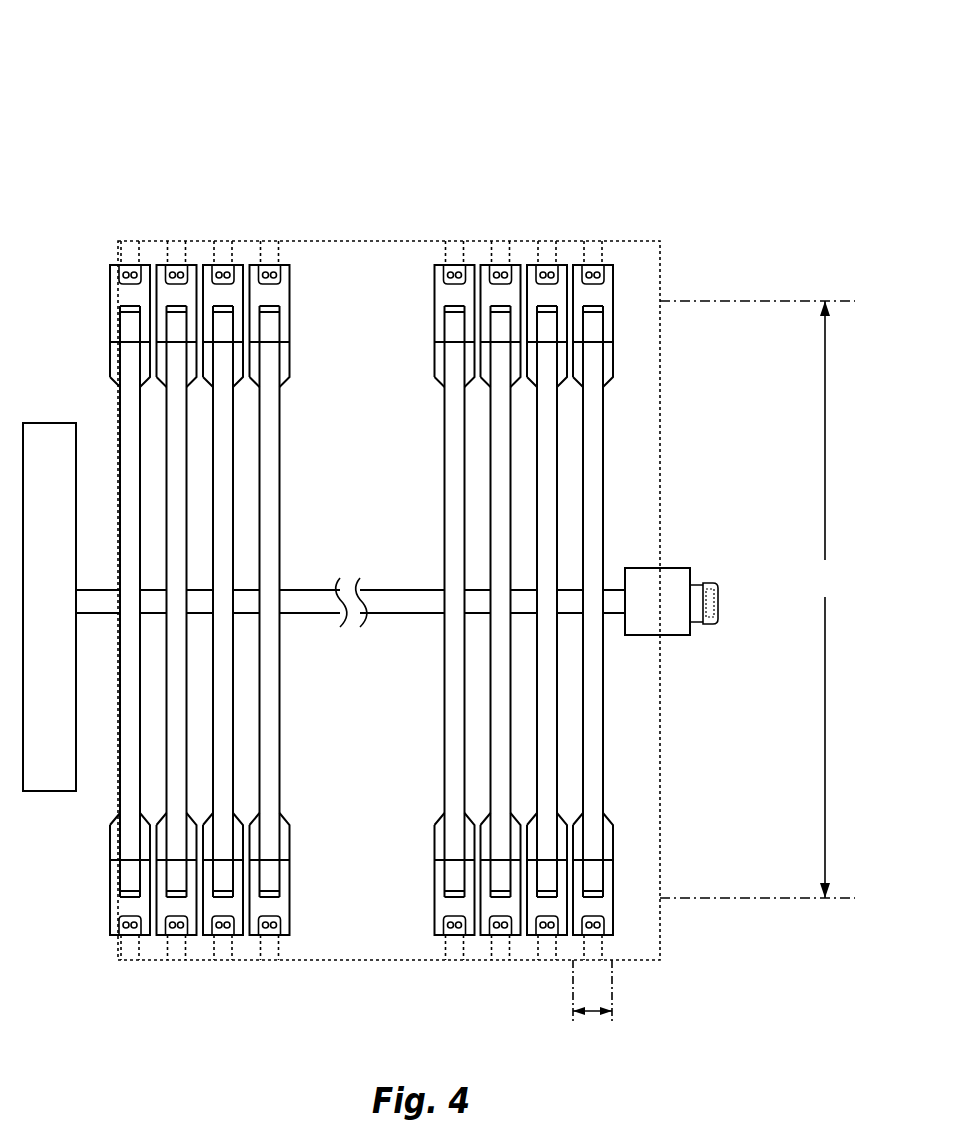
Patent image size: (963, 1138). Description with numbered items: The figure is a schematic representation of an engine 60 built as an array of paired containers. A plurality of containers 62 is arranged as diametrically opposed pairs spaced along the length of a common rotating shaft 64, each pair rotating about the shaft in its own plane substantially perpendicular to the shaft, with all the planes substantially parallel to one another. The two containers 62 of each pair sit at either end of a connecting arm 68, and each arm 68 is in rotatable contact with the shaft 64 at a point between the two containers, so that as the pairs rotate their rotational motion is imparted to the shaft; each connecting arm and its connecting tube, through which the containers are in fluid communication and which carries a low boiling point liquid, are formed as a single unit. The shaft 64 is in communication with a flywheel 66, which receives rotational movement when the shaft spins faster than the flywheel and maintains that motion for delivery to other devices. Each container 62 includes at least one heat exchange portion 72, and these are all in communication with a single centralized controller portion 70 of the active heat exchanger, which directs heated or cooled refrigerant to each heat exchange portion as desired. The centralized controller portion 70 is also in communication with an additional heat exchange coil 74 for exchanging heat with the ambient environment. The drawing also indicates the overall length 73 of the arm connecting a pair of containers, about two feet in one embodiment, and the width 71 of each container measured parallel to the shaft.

The engine 60 is at (90, 128).
The container 62 is at (112, 283).
The common rotating shaft 64 is at (397, 614).
The flywheel 66 is at (56, 422).
The connecting arm 68 is at (120, 490).
The centralized controller portion 70 is at (672, 572).
The container width 71 is at (594, 1013).
The heat exchange portion 72 is at (118, 272).
The arm overall length 73 is at (757, 599).
The additional heat exchange coil 74 is at (718, 607).